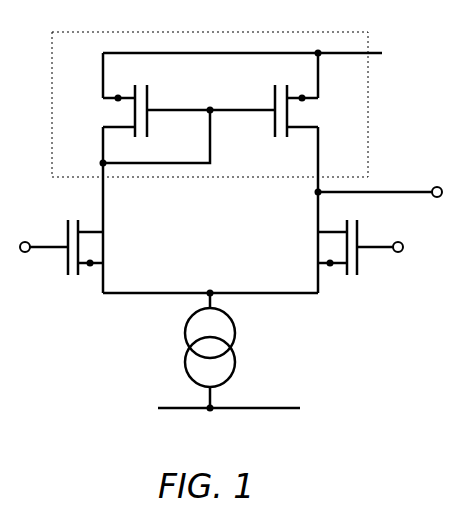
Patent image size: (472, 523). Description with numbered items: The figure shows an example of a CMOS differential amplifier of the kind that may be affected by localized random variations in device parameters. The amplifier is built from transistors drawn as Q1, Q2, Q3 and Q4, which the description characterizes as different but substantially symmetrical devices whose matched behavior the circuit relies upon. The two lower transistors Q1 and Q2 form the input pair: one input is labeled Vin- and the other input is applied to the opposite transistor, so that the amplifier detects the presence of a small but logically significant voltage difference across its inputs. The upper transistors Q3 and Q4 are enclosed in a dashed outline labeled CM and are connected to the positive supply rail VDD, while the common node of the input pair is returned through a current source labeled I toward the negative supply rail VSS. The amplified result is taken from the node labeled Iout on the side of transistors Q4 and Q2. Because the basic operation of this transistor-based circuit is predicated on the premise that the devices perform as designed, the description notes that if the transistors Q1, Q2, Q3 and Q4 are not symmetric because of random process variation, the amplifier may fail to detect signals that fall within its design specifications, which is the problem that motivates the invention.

The first input transistor Q1 is at (80, 247).
The second input transistor Q2 is at (341, 247).
The current mirror transistor (diode-connected) Q3 is at (107, 111).
The current mirror output transistor Q4 is at (314, 111).
The current mirror CM is at (210, 104).
The tail current source I is at (252, 372).
The output current terminal Iout is at (379, 174).
The positive supply rail VDD is at (417, 55).
The negative supply rail VSS is at (257, 404).
The inverting input Vin- is at (397, 226).